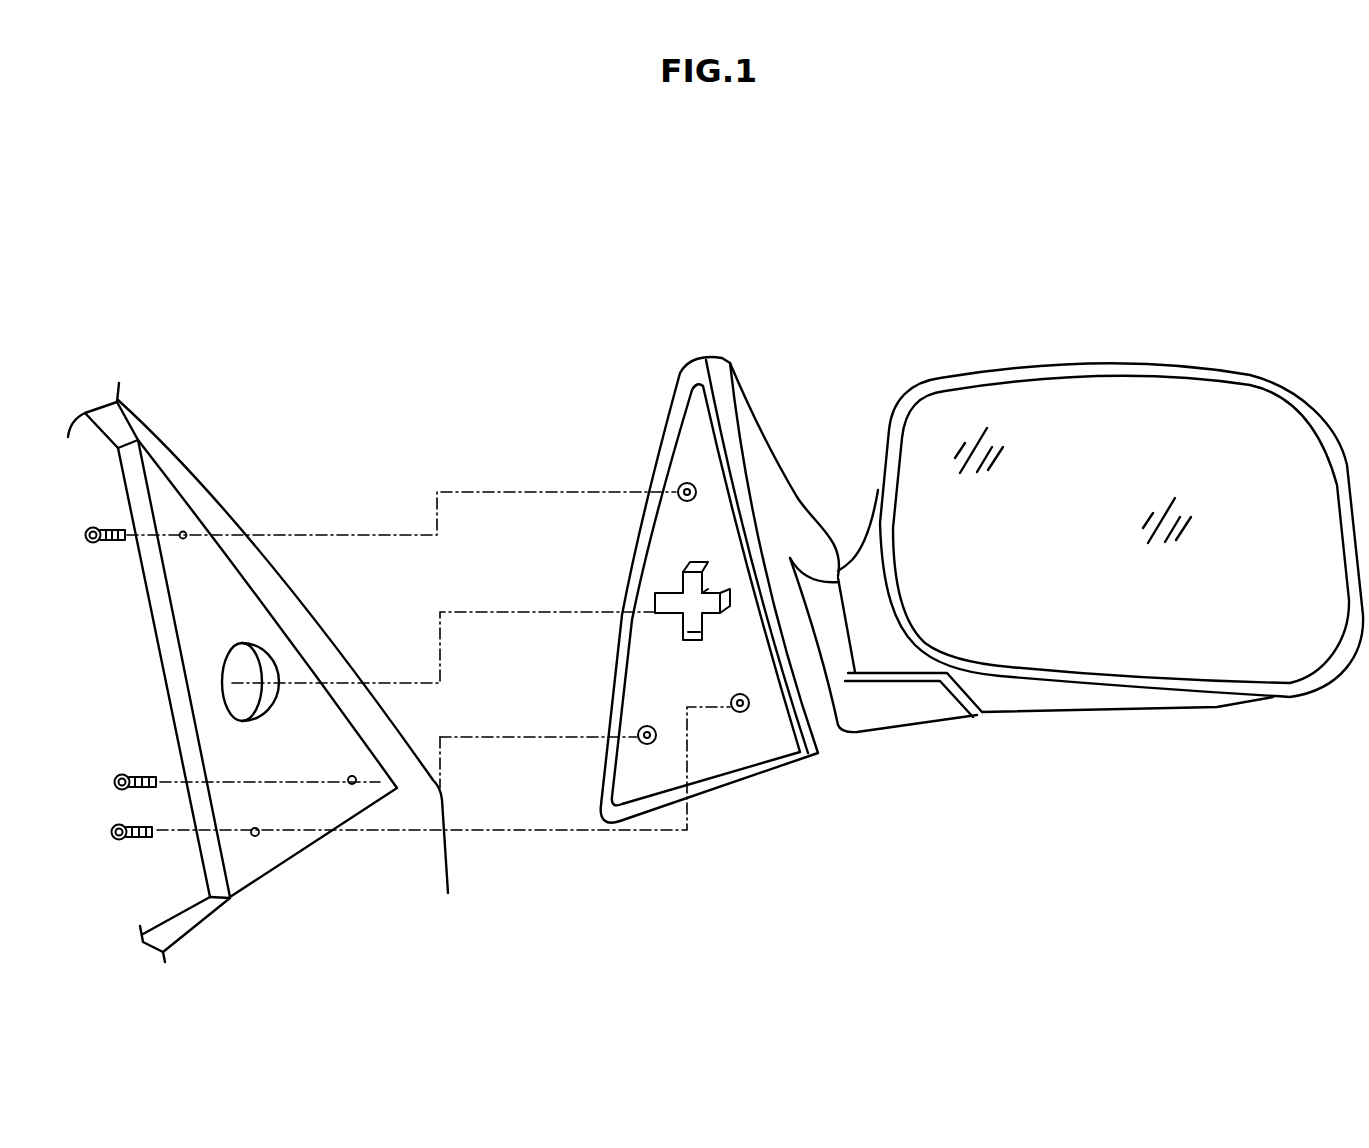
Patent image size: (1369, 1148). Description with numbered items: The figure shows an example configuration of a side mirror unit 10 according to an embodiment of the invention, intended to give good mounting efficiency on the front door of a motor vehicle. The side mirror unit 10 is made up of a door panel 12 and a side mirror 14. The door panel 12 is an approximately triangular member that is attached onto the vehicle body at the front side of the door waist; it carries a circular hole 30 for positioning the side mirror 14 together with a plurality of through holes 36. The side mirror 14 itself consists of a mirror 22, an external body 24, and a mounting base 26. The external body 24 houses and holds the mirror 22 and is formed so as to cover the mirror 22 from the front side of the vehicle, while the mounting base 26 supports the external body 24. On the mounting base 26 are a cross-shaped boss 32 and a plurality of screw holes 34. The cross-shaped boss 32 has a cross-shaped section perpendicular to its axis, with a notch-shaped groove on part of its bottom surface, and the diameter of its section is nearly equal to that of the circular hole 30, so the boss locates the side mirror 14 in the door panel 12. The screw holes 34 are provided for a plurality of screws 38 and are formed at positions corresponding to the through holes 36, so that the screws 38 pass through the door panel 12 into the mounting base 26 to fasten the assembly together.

The side mirror unit 10 is at (1135, 215).
The door panel 12 is at (205, 458).
The side mirror 14 is at (952, 355).
The mirror 22 is at (1105, 645).
The external body 24 is at (1107, 366).
The mounting base 26 is at (735, 393).
The circular hole 30 is at (265, 640).
The cross-shaped boss 32 is at (693, 560).
The screw holes 34 is at (686, 482).
The through holes 36 is at (184, 539).
The screws 38 is at (93, 543).